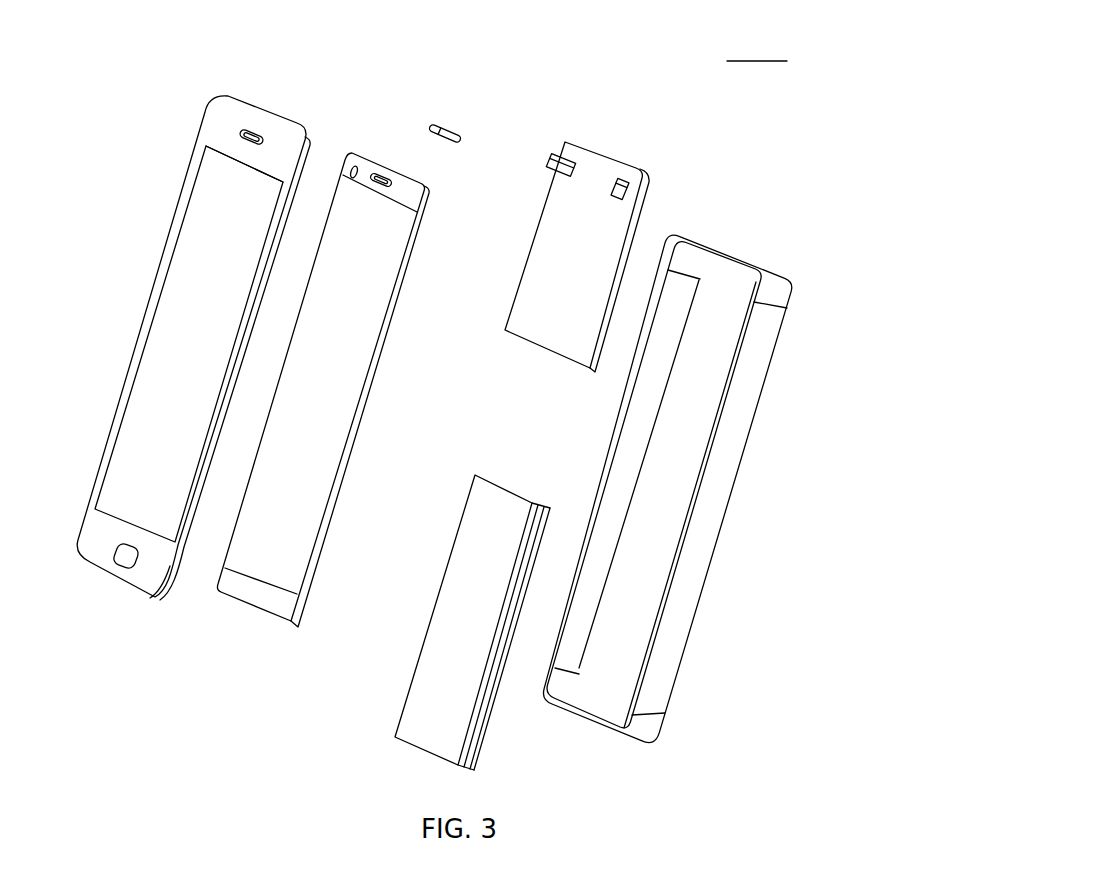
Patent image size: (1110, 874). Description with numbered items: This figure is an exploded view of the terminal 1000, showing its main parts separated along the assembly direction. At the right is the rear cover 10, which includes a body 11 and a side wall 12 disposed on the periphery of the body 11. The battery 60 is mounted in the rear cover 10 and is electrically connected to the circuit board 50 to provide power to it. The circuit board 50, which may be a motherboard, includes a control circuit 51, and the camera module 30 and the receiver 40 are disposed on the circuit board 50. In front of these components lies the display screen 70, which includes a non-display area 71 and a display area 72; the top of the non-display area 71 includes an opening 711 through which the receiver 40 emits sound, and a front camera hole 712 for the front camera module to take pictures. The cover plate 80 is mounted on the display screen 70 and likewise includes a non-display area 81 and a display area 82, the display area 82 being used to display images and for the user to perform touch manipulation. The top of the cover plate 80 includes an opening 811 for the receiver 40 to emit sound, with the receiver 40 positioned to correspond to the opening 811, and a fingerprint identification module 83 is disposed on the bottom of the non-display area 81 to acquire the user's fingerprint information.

The terminal 1000 is at (757, 49).
The rear cover 10 is at (693, 481).
The body 11 is at (652, 525).
The side wall 12 is at (747, 389).
The camera module 30 is at (612, 183).
The receiver 40 is at (441, 124).
The circuit board 50 is at (576, 242).
The control circuit 51 is at (559, 296).
The battery 60 is at (485, 503).
The display screen 70 is at (346, 366).
The non-display area 71 is at (398, 159).
The opening 711 is at (382, 175).
The front camera hole 712 is at (351, 164).
The display area 72 is at (328, 399).
The cover plate 80 is at (193, 357).
The non-display area 81 is at (232, 127).
The opening 811 is at (251, 132).
The display area 82 is at (194, 281).
The fingerprint identification module 83 is at (120, 553).